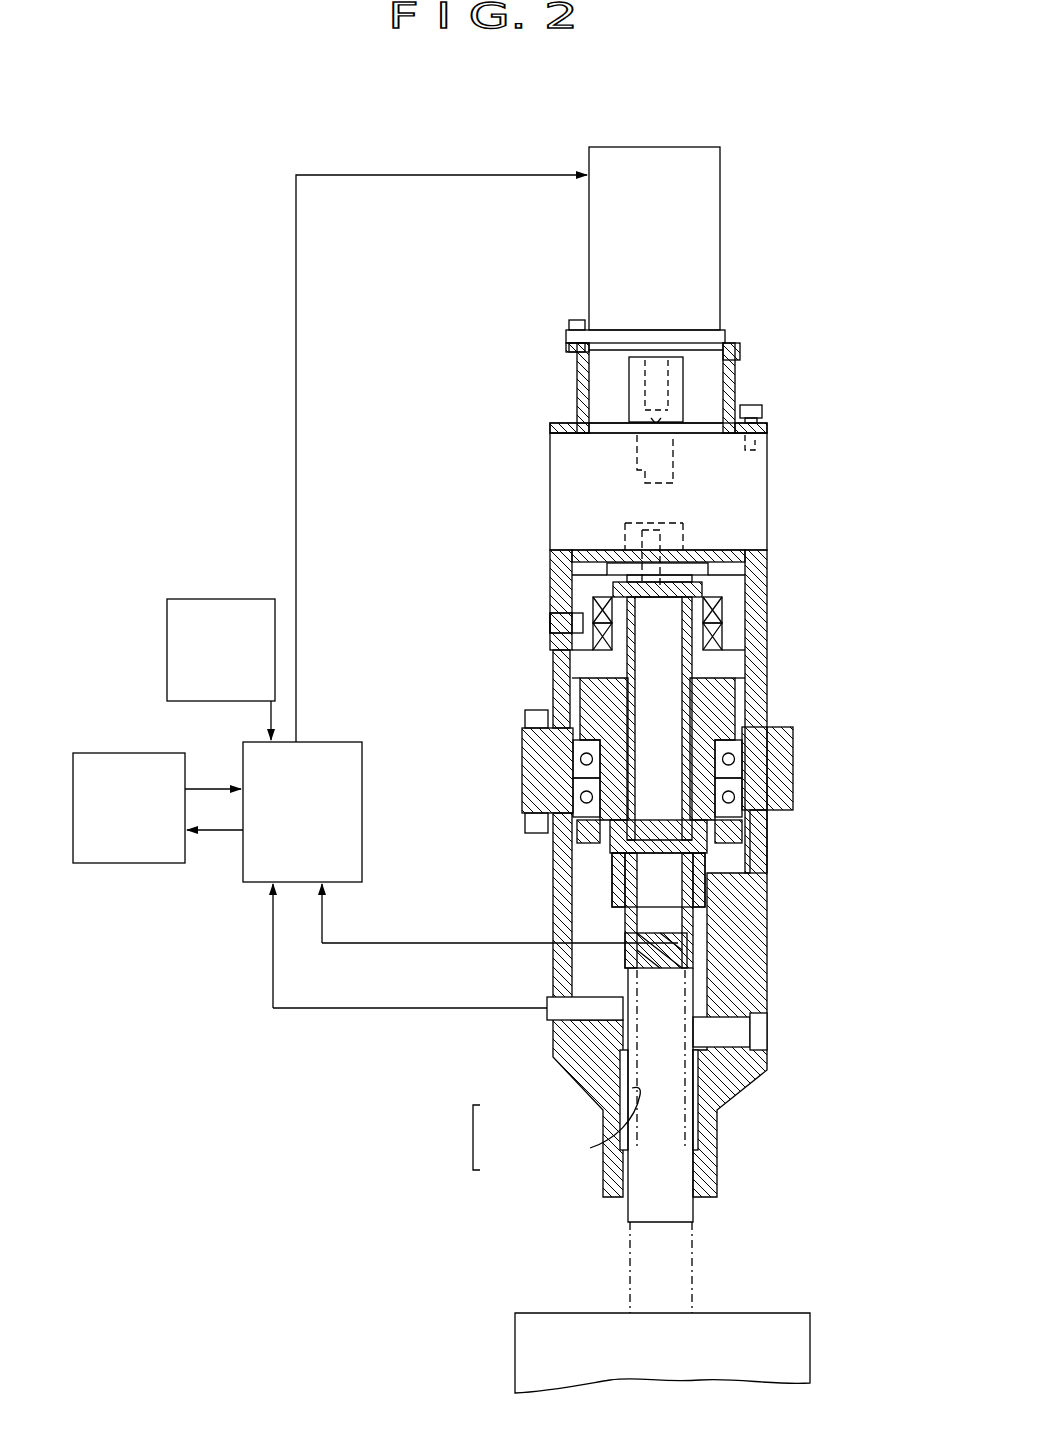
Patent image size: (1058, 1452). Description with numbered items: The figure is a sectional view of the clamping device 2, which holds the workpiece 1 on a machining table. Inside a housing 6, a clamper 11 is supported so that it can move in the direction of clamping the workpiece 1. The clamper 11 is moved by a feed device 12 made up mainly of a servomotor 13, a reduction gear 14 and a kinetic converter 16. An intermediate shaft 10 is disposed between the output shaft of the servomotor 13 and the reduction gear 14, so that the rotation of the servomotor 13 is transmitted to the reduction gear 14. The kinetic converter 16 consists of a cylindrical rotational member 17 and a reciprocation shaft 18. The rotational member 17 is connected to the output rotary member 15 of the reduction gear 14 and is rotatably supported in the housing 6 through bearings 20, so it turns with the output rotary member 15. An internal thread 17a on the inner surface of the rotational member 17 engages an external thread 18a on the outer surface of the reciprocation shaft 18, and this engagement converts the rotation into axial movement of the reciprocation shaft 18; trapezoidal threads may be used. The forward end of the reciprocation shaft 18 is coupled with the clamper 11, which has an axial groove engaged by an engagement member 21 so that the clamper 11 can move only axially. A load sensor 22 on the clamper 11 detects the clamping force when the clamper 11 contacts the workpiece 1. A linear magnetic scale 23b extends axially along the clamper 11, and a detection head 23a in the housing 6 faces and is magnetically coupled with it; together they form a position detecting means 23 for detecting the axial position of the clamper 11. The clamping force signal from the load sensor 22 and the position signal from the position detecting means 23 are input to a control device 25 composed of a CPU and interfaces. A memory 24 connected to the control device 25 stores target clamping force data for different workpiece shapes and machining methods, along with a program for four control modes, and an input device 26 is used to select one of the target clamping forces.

The workpiece 1 is at (748, 1330).
The clamping device 2 is at (513, 770).
The housing 6 is at (558, 910).
The intermediate shaft 10 is at (636, 375).
The clamper 11 is at (680, 1170).
The feed device 12 is at (536, 452).
The servomotor 13 is at (605, 270).
The reduction gear 14 is at (565, 492).
The output rotary member 15 is at (600, 570).
The kinetic converter 16 is at (578, 693).
The rotational member 17 is at (705, 588).
The internal thread 17a is at (738, 597).
The reciprocation shaft 18 is at (680, 812).
The external thread 18a is at (550, 735).
The bearings 20 is at (738, 748).
The engagement member 21 is at (740, 1035).
The load sensor 22 is at (678, 943).
The position detecting means 23 is at (456, 1137).
The detection head 23a is at (593, 1008).
The linear magnetic scale 23b is at (590, 1148).
The memory 24 is at (138, 863).
The control device 25 is at (243, 876).
The input device 26 is at (167, 665).